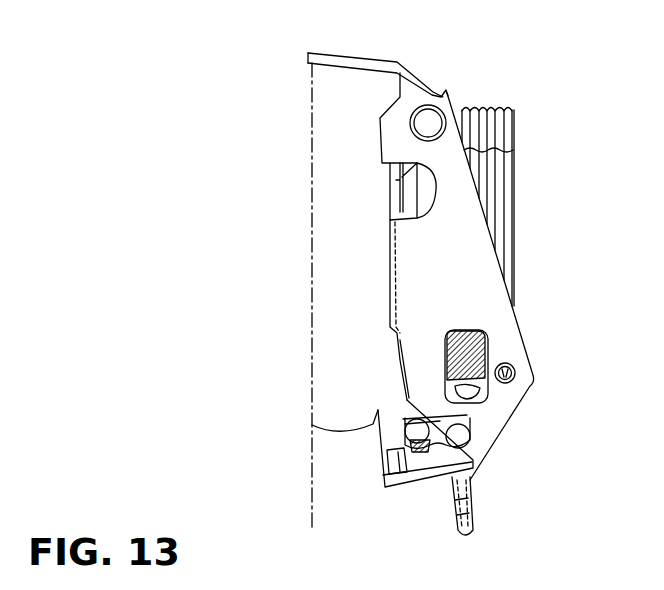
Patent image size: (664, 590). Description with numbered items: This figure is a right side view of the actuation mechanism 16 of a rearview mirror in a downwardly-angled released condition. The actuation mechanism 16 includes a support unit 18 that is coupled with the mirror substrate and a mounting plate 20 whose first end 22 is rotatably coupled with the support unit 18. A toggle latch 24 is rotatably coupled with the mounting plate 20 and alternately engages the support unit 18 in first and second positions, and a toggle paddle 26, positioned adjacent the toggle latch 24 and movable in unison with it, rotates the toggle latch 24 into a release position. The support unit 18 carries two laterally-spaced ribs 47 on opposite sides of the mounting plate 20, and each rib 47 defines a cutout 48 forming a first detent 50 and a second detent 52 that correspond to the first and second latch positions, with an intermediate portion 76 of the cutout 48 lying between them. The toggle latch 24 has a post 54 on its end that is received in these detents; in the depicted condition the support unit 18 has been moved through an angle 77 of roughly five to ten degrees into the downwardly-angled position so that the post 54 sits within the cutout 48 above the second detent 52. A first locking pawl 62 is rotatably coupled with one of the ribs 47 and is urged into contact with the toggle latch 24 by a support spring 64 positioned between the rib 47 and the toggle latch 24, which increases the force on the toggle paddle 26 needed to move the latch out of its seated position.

The actuation mechanism 16 is at (504, 70).
The support unit 18 is at (493, 228).
The mounting plate 20 is at (518, 156).
The first end 22 is at (388, 92).
The toggle latch 24 is at (450, 428).
The toggle paddle 26 is at (475, 533).
The ribs 47 is at (455, 288).
The cutout 48 is at (476, 438).
The first detent 50 is at (467, 435).
The second detent 52 is at (420, 450).
The post 54 is at (414, 430).
The first locking pawl 62 is at (483, 391).
The support spring 64 is at (468, 353).
The intermediate portion 76 is at (462, 416).
The angle 77 is at (349, 432).